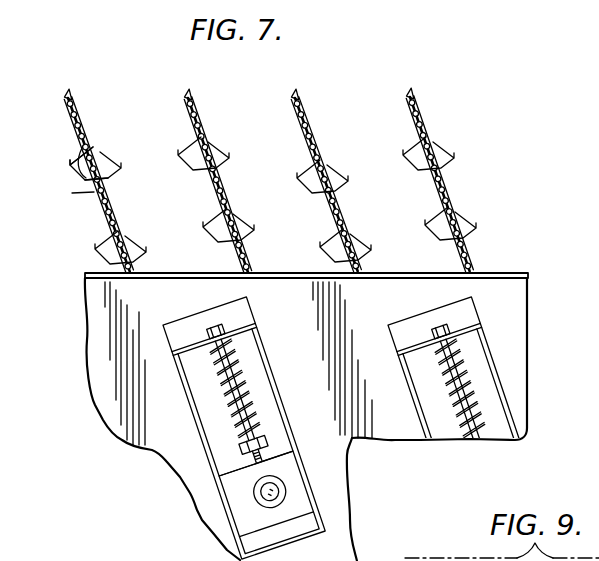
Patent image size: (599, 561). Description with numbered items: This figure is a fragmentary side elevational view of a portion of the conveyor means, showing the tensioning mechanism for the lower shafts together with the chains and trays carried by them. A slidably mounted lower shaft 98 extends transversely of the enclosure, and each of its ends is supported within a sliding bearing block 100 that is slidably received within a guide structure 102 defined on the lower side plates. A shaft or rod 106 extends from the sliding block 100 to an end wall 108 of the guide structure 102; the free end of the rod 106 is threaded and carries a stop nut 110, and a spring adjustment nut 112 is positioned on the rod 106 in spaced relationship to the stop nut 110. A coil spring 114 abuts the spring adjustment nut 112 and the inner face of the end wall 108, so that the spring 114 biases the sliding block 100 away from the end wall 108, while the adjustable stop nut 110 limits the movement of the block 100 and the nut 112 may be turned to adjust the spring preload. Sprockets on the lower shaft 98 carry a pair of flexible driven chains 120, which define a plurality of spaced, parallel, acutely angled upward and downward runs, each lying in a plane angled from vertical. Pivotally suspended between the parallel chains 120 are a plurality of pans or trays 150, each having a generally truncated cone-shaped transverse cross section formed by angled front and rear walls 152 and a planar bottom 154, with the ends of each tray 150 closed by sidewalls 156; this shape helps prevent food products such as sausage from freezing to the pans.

The lower shaft 98 is at (285, 485).
The sliding bearing block 100 is at (237, 488).
The guide structure 102 is at (197, 413).
The shaft or rod 106 is at (243, 391).
The end wall 108 is at (233, 330).
The stop nut 110 is at (227, 327).
The spring adjustment nut 112 is at (268, 441).
The coil spring 114 is at (248, 402).
The chain 120 is at (198, 112).
The tray 150 is at (110, 165).
The front and rear walls 152 is at (95, 191).
The planar bottom 154 is at (108, 213).
The sidewall 156 is at (80, 147).